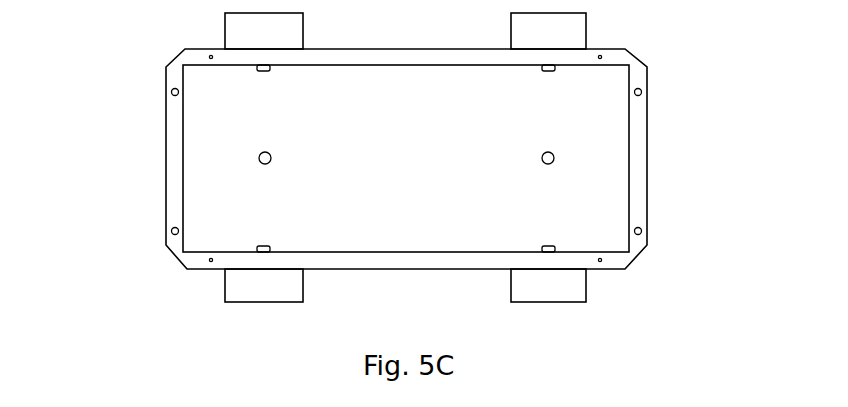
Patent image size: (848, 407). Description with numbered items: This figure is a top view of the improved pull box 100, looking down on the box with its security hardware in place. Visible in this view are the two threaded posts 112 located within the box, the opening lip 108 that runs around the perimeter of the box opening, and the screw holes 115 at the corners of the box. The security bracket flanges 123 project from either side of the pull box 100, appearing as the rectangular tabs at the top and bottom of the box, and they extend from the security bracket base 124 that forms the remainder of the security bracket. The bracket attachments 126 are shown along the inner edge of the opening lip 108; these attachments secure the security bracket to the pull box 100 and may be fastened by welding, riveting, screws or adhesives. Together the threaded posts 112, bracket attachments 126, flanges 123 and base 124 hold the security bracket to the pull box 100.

The pull box 100 is at (409, 157).
The opening lip 108 is at (175, 178).
The threaded post 112 is at (548, 157).
The screw hole 115 is at (166, 92).
The security bracket flange 123 is at (522, 285).
The security bracket base 124 is at (43, 0).
The bracket attachment 126 is at (547, 73).